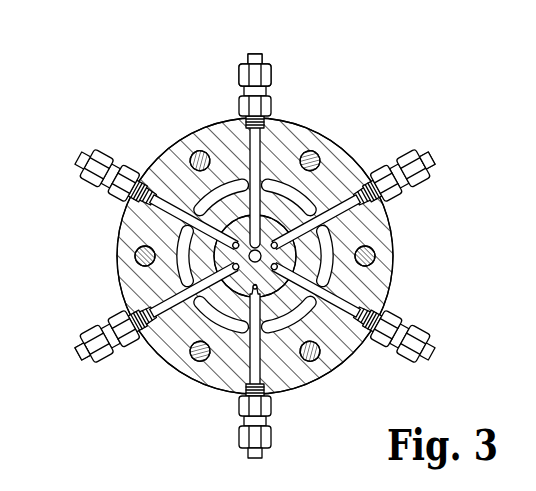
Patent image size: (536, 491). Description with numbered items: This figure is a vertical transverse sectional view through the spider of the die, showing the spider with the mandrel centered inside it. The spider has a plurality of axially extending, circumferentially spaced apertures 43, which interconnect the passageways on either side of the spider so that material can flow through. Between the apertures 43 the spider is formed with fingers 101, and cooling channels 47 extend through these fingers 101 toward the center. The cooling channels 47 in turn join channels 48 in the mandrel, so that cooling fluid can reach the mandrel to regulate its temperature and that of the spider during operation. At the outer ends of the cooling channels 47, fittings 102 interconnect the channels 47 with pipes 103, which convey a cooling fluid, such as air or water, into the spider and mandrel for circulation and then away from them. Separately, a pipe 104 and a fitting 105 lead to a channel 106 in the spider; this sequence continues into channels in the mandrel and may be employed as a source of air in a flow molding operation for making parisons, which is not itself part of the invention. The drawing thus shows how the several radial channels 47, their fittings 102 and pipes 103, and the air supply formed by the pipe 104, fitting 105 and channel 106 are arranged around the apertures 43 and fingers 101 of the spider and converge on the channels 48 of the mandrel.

The aperture 43 is at (288, 190).
The cooling channel 47 is at (170, 208).
The channel 48 is at (233, 233).
The finger 101 is at (262, 182).
The fitting 102 is at (430, 178).
The pipe 103 is at (438, 148).
The pipe 104 is at (264, 53).
The fitting 105 is at (272, 73).
The channel 106 is at (249, 155).